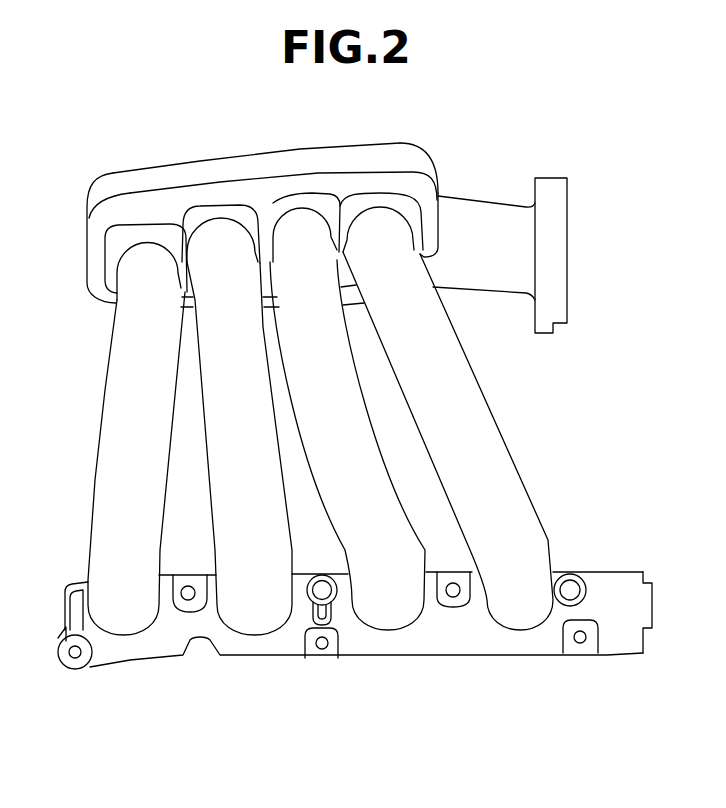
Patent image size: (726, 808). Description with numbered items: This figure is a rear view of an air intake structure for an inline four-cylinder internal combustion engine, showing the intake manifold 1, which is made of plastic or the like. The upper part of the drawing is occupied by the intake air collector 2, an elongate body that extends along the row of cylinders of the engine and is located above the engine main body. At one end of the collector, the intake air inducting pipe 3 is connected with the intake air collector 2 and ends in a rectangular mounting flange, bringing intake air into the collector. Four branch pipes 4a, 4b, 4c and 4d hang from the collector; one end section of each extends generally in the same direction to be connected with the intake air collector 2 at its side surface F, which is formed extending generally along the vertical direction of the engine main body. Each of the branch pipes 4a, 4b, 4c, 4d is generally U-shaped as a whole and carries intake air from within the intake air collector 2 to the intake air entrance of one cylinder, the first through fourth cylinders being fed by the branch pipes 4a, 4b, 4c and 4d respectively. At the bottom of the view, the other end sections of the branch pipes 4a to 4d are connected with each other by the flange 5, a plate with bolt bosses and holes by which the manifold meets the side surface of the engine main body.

The intake manifold 1 is at (489, 150).
The intake air collector 2 is at (312, 157).
The intake air inducting pipe 3 is at (473, 220).
The branch pipe 4a is at (485, 448).
The branch pipe 4b is at (348, 372).
The branch pipe 4c is at (220, 382).
The branch pipe 4d is at (110, 482).
The flange 5 is at (607, 587).
The side surface F is at (148, 207).